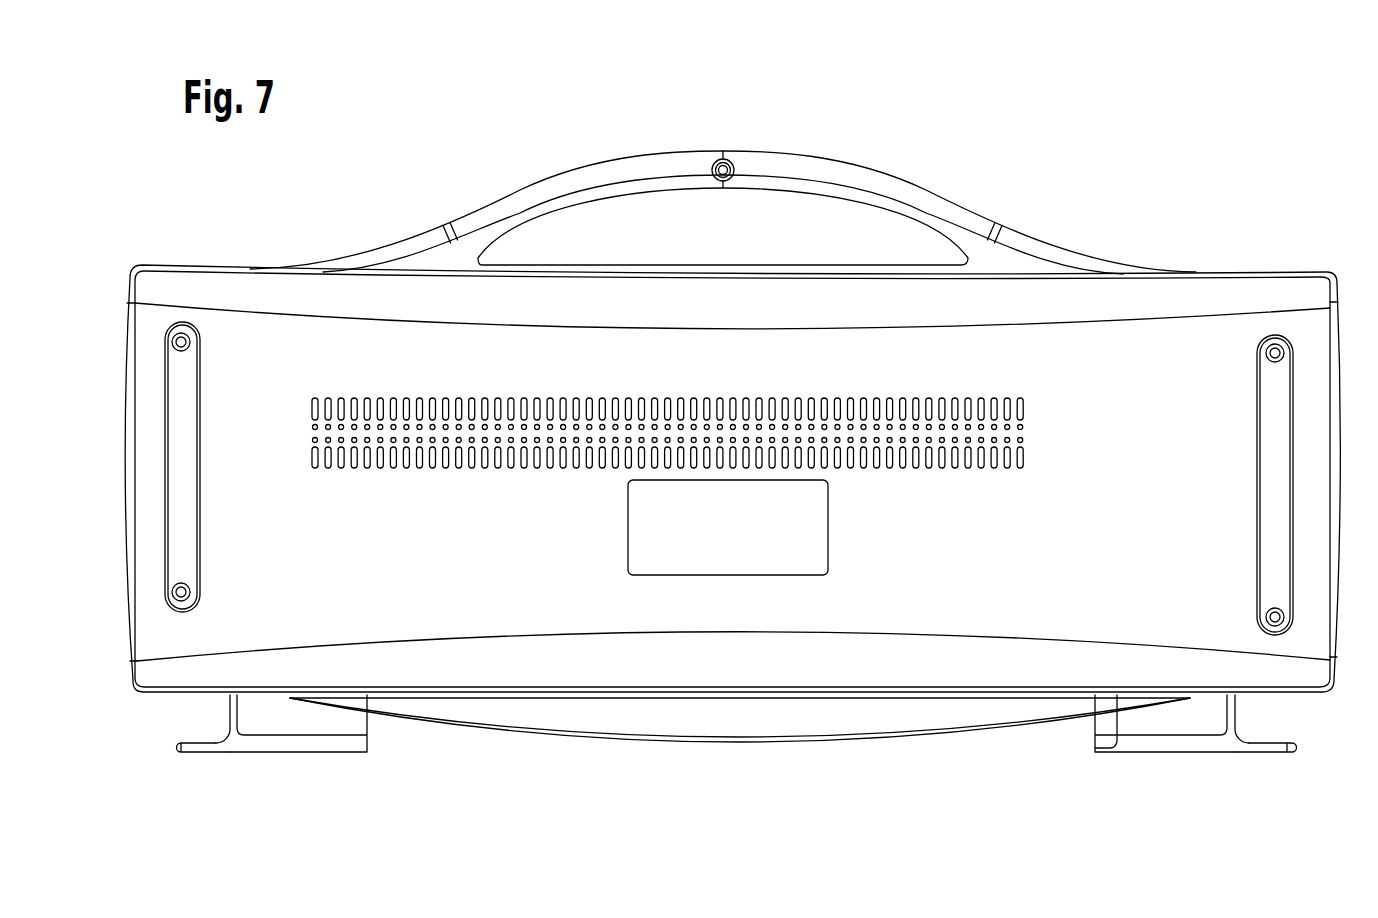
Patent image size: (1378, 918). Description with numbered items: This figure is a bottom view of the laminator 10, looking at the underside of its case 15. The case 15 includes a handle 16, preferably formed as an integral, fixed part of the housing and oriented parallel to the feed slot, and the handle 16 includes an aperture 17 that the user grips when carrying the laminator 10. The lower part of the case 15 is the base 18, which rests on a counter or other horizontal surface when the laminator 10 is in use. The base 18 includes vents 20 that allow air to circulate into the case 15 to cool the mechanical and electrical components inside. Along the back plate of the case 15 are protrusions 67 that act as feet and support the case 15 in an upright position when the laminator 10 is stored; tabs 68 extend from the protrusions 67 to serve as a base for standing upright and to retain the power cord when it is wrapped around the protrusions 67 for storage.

The laminator 10 is at (1123, 165).
The case 15 is at (1203, 333).
The handle 16 is at (765, 168).
The aperture 17 is at (852, 235).
The base 18 is at (917, 602).
The vents 20 is at (410, 397).
The protrusions 67 is at (360, 723).
The tabs 68 is at (190, 752).